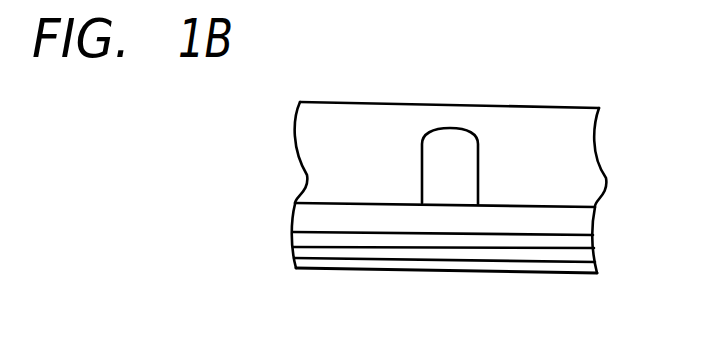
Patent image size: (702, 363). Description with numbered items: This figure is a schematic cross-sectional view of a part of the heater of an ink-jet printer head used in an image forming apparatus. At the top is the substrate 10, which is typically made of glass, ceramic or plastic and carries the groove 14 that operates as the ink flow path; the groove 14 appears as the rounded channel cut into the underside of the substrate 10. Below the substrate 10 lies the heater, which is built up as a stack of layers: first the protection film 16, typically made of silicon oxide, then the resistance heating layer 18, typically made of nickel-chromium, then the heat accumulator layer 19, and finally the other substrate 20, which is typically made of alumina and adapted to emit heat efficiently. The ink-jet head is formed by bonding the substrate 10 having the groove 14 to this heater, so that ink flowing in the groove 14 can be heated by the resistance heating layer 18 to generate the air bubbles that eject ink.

The substrate 10 is at (350, 103).
The groove 14 is at (450, 127).
The protection film 16 is at (377, 210).
The resistance heating layer 18 is at (450, 238).
The heat accumulator layer 19 is at (498, 253).
The substrate 20 is at (552, 268).